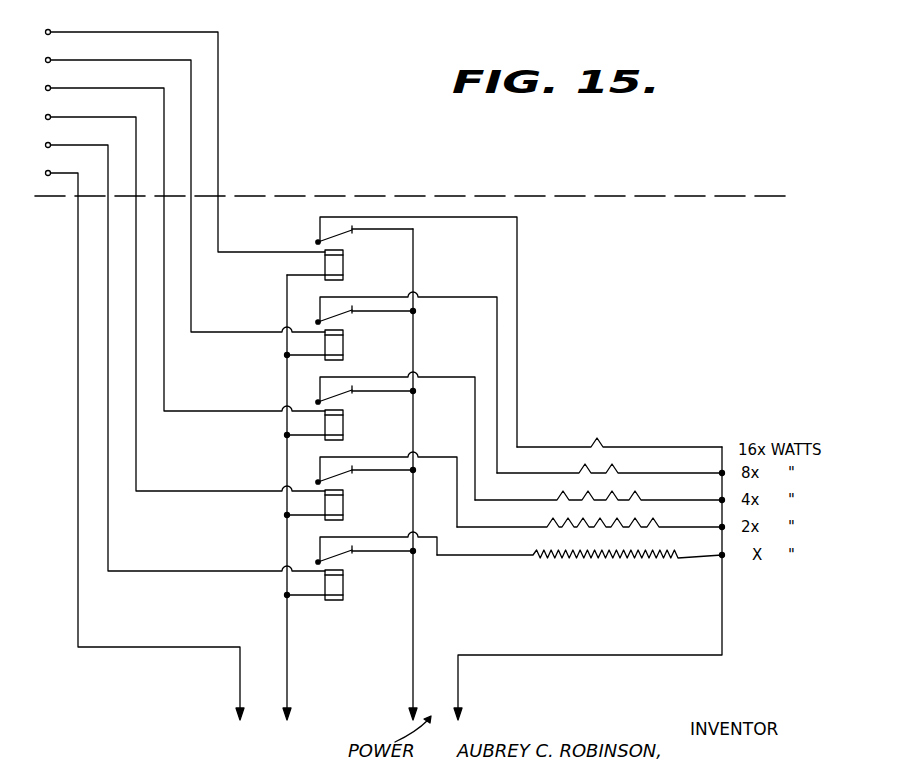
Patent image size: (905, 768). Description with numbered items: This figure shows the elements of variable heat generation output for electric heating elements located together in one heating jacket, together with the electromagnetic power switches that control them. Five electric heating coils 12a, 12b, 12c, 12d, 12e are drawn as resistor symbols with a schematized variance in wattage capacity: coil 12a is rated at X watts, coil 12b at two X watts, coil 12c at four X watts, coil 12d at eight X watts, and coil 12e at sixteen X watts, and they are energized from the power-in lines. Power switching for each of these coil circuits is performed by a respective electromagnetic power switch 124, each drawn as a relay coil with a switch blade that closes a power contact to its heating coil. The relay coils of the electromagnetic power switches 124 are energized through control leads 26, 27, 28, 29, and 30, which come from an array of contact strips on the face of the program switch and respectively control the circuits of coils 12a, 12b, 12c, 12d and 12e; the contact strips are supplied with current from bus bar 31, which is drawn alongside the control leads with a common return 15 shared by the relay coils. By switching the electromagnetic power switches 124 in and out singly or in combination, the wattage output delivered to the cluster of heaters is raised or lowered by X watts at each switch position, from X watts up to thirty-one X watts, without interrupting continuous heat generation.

The common bus line 15 is at (288, 664).
The control lead 26 is at (182, 573).
The control lead 27 is at (190, 492).
The control lead 28 is at (205, 412).
The control lead 29 is at (222, 331).
The control lead 30 is at (231, 253).
The bus bar 31 is at (160, 649).
The electromagnetic power switch 124 is at (344, 263).
The heating coil 12a is at (626, 555).
The heating coil 12b is at (635, 527).
The heating coil 12c is at (630, 497).
The heating coil 12d is at (614, 471).
The heating coil 12e is at (601, 437).